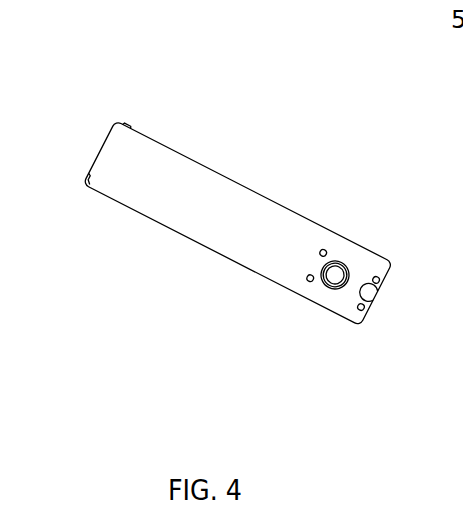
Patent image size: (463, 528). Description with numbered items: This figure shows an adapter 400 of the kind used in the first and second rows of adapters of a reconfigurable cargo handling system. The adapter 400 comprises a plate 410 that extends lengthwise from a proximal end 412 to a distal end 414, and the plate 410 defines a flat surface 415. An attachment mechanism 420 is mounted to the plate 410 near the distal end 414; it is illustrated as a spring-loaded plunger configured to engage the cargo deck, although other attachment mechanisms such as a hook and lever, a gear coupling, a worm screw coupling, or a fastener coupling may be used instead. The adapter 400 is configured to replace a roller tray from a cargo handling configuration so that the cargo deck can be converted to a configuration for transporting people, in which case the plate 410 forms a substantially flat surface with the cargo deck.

The adapter 400 is at (106, 91).
The plate 410 is at (242, 252).
The proximal end 412 is at (104, 145).
The distal end 414 is at (392, 269).
The flat surface 415 is at (205, 210).
The attachment mechanism 420 is at (339, 255).